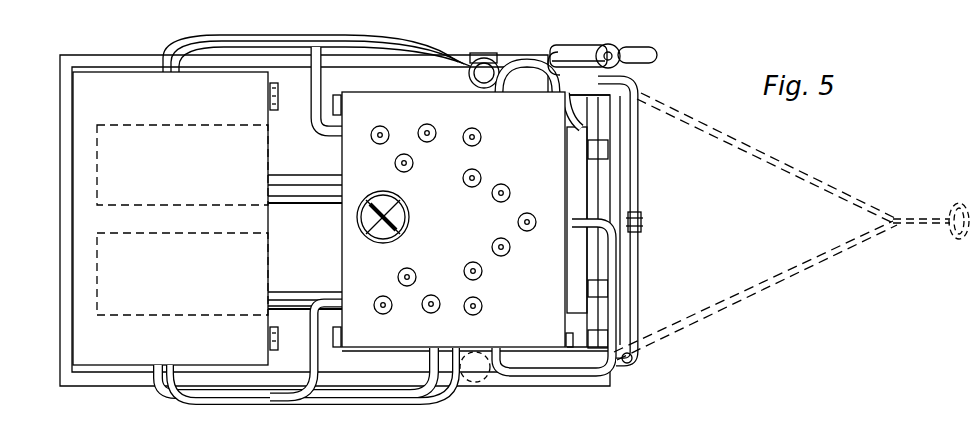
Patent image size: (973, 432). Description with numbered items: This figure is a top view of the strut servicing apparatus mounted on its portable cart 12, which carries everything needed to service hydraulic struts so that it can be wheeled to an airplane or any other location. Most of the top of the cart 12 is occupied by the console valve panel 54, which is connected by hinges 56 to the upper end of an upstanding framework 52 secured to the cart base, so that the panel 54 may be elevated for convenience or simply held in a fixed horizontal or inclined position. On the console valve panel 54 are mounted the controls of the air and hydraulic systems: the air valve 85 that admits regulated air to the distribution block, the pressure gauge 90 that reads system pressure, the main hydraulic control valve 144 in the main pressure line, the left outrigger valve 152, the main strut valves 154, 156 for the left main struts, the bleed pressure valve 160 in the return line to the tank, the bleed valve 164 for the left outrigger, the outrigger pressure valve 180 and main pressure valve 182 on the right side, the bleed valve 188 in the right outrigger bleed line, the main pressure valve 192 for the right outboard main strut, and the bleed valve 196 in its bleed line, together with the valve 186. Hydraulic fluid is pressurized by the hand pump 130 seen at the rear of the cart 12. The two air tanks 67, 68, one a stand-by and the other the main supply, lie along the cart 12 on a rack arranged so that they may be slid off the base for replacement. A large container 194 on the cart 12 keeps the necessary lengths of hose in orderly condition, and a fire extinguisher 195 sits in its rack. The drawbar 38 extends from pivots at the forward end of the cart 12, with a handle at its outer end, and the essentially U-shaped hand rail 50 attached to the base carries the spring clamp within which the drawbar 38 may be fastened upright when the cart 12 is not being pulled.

The portable cart 12 is at (395, 362).
The drawbar 38 is at (640, 263).
The hand rail 50 is at (623, 367).
The upstanding framework 52 is at (600, 150).
The console valve panel 54 is at (483, 333).
The hinges 56 is at (568, 340).
The air tank 67 is at (293, 188).
The air tank 68 is at (288, 305).
The air valve 85 is at (506, 187).
The pressure gauge 90 is at (363, 224).
The hand pump 130 is at (580, 50).
The main hydraulic control valve 144 is at (508, 252).
The left outrigger valve 152 is at (407, 287).
The main strut valve 154 is at (436, 312).
The main strut valve 156 is at (468, 263).
The bleed pressure valve 160 is at (538, 204).
The bleed valve 164 is at (379, 314).
The outrigger pressure valve 180 is at (396, 165).
The main pressure valve 182 is at (428, 124).
The switch 186 is at (482, 306).
The bleed valve 188 is at (373, 130).
The main pressure valve 192 is at (466, 183).
The container 194 is at (123, 348).
The fire extinguisher 195 is at (486, 66).
The bleed valve 196 is at (482, 137).